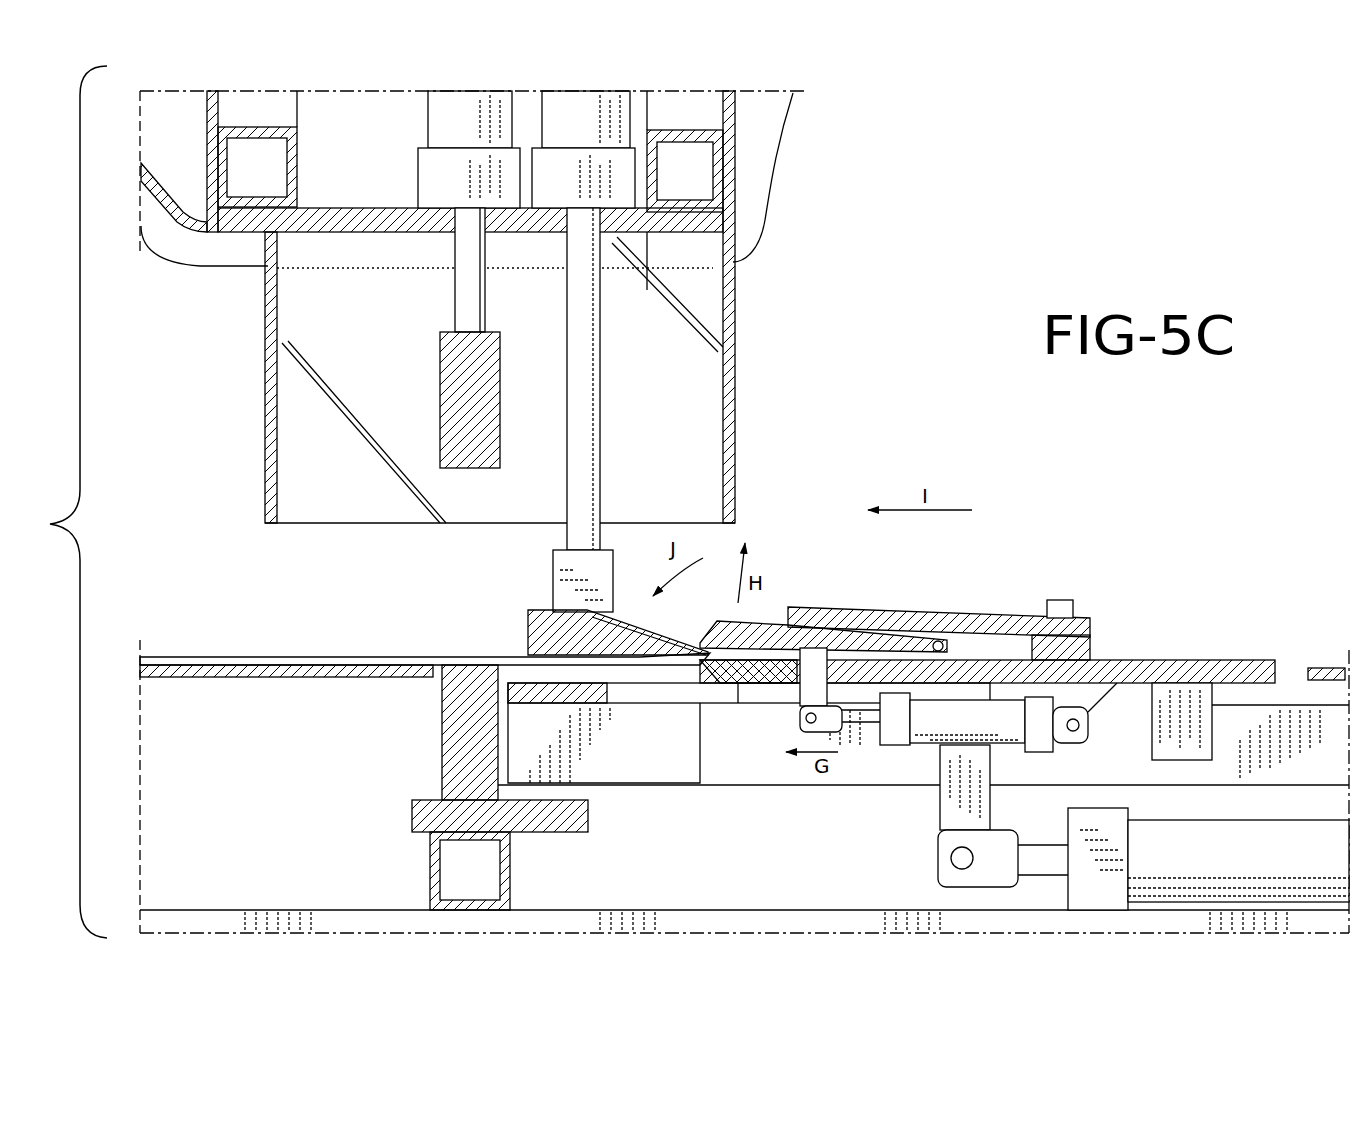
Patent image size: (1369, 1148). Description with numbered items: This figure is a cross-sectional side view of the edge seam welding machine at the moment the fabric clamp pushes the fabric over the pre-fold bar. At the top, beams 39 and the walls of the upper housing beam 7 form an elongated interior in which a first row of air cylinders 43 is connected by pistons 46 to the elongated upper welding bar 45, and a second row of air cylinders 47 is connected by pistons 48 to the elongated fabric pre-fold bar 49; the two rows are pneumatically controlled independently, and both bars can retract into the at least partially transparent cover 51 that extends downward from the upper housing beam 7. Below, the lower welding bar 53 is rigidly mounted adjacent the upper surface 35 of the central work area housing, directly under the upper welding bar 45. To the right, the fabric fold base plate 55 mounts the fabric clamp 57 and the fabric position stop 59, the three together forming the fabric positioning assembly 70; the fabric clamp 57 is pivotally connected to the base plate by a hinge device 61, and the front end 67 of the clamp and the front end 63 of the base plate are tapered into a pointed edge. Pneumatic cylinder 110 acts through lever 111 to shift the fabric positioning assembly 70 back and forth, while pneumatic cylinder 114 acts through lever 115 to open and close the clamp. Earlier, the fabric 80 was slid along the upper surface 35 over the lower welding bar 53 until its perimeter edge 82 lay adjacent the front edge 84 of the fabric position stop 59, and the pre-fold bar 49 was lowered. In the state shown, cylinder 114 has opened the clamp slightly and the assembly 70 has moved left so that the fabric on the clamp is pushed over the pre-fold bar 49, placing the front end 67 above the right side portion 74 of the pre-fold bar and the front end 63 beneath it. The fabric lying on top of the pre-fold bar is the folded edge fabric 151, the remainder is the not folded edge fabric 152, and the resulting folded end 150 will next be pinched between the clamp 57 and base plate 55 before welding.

The upper housing beam 7 is at (740, 161).
The upper surface 35 is at (195, 657).
The beams 39 is at (297, 168).
The first row of air cylinders 43 is at (438, 126).
The upper welding bar 45 is at (446, 394).
The pistons 46 is at (460, 302).
The second row of air cylinders 47 is at (577, 105).
The pistons 48 is at (590, 348).
The fabric pre-fold bar 49 is at (526, 622).
The at least partially transparent cover 51 is at (742, 318).
The lower welding bar 53 is at (452, 730).
The fabric fold base plate 55 is at (1200, 650).
The fabric clamp 57 is at (738, 668).
The fabric position stop 59 is at (1000, 605).
The hinge device 61 is at (936, 615).
The front end 63 is at (718, 665).
The front end 67 is at (705, 626).
The fabric positioning assembly 70 is at (1040, 576).
The right side portion 74 is at (683, 657).
The fabric 80 is at (372, 652).
The perimeter edge 82 is at (622, 612).
The front edge 84 is at (790, 612).
The pneumatic cylinder 110 is at (1250, 866).
The lever 111 is at (940, 834).
The pneumatic cylinder 114 is at (930, 745).
The lever 115 is at (835, 622).
The folded end 150 is at (695, 665).
The folded edge fabric 151 is at (663, 627).
The not folded edge fabric 152 is at (648, 660).